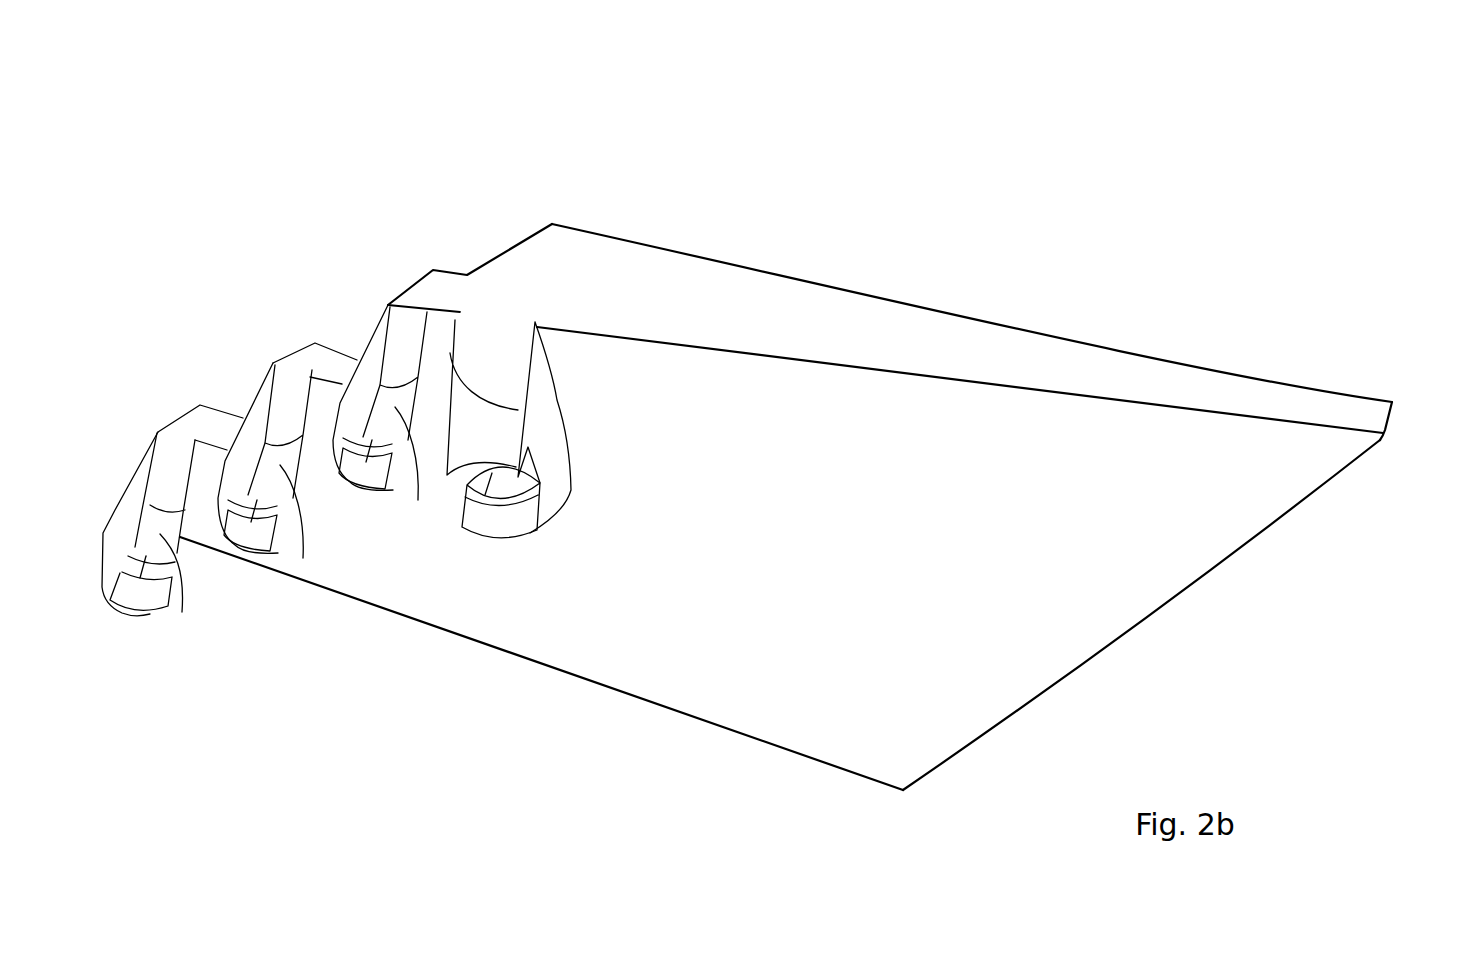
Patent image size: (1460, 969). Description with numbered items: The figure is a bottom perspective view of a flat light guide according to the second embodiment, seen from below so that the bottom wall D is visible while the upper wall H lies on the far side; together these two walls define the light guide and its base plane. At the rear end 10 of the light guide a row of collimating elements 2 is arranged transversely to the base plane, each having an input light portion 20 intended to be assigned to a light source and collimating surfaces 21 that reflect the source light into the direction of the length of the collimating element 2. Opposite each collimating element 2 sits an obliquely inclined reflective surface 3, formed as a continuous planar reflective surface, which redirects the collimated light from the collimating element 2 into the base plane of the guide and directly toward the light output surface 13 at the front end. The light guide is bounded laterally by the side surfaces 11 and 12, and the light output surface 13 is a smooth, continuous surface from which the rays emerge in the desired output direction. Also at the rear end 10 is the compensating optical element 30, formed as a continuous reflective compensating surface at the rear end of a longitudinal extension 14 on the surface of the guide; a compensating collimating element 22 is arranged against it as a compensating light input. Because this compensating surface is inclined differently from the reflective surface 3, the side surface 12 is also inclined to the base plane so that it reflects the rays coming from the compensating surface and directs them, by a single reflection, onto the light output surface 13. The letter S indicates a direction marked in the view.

The collimating element 2 is at (363, 380).
The inclined reflective surface 3 is at (408, 293).
The rear end 10 is at (243, 262).
The side surface 11 is at (832, 770).
The side surface 12 is at (822, 332).
The light output surface 13 is at (1165, 610).
The longitudinal extension 14 is at (570, 245).
The input light portion 20 is at (143, 562).
The collimating surfaces 21 is at (180, 612).
The compensating collimating element 22 is at (537, 431).
The compensating optical element 30 is at (503, 247).
The bottom wall D is at (1030, 460).
The upper wall H is at (1227, 353).
The side direction S is at (1400, 417).